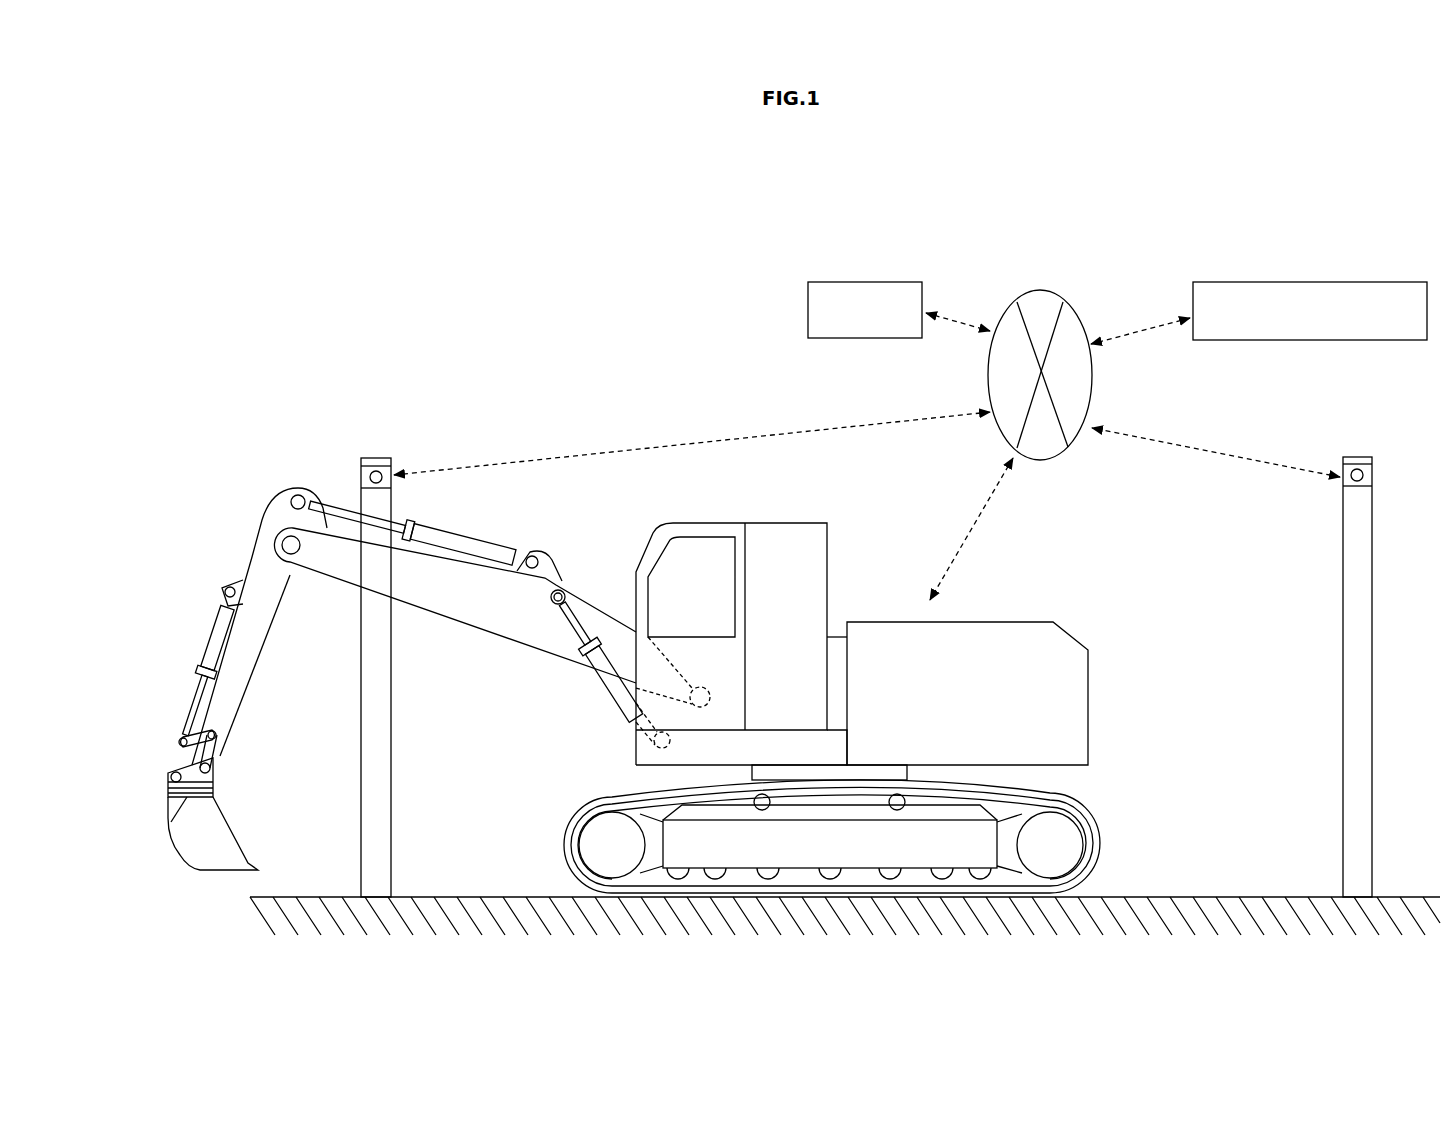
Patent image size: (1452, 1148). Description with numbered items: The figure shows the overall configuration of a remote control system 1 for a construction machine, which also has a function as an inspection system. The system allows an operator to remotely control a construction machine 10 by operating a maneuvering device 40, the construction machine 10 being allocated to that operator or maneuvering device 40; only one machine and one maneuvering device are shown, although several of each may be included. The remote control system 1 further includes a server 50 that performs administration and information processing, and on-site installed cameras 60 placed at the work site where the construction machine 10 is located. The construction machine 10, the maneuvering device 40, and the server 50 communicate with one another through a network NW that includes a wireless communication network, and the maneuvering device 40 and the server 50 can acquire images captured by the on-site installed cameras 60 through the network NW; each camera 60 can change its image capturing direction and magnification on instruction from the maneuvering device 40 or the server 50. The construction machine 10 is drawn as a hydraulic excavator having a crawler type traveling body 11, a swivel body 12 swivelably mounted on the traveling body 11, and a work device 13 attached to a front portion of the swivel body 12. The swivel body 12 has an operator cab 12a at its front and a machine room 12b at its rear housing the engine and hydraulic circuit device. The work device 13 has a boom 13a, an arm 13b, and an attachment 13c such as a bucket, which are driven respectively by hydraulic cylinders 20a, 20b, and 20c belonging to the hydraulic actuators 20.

The remote control system 1 is at (570, 262).
The construction machine 10 is at (860, 490).
The traveling body 11 is at (568, 805).
The swivel body 12 is at (850, 584).
The operator cab 12a is at (731, 523).
The machine room 12b is at (955, 622).
The work device 13 is at (228, 492).
The boom 13a is at (590, 588).
The arm 13b is at (295, 640).
The attachment 13c is at (165, 832).
The hydraulic actuators 20 is at (382, 631).
The hydraulic cylinder 20a is at (615, 698).
The hydraulic cylinder 20b is at (440, 532).
The hydraulic cylinder 20c is at (210, 636).
The maneuvering device 40 is at (1258, 282).
The server 50 is at (893, 282).
The on-site installed camera 60 is at (373, 458).
The network NW is at (1066, 300).